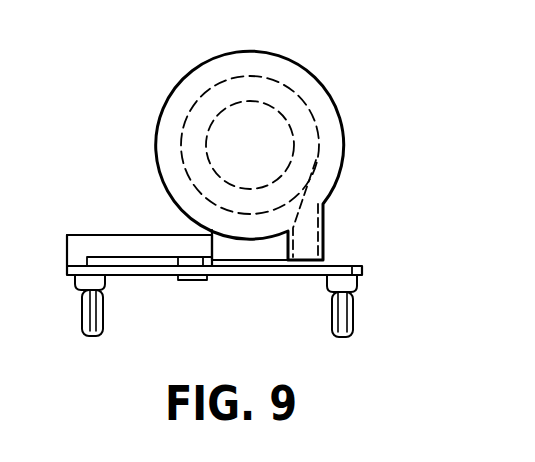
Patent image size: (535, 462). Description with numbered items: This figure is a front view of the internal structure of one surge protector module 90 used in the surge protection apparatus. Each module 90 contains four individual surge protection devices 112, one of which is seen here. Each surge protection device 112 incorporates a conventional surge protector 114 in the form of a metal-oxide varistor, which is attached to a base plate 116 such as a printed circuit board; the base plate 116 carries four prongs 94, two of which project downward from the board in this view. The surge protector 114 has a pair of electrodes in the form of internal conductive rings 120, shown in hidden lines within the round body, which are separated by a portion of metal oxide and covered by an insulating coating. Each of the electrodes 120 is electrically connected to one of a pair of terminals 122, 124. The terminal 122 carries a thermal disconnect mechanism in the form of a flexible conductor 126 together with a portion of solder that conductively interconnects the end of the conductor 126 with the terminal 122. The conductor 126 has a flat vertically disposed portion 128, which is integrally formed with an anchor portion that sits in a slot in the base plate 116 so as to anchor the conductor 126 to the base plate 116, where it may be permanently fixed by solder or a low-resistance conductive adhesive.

The surge protector module 90 is at (371, 126).
The prongs 94 is at (92, 337).
The surge protection device 112 is at (106, 104).
The surge protector 114 is at (315, 93).
The base plate 116 is at (362, 272).
The internal conductive rings 120 is at (315, 165).
The terminal 122 is at (223, 262).
The terminal 124 is at (326, 231).
The flexible conductor 126 is at (126, 232).
The flat vertically disposed portion 128 is at (82, 248).